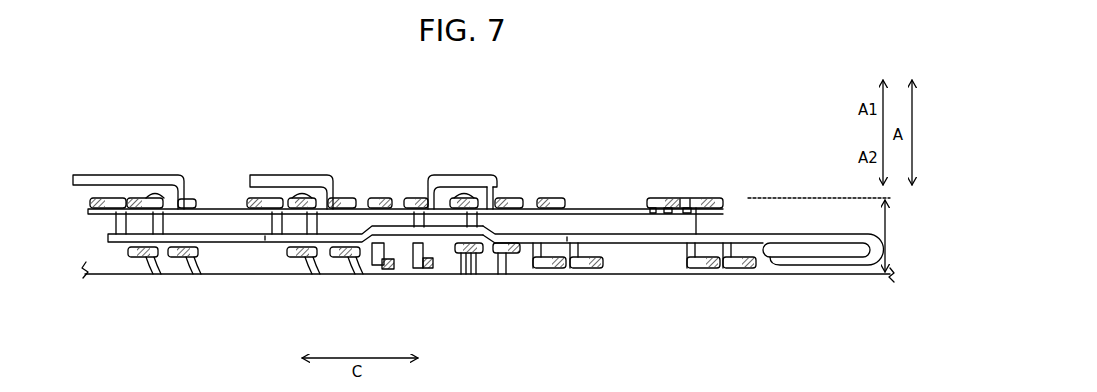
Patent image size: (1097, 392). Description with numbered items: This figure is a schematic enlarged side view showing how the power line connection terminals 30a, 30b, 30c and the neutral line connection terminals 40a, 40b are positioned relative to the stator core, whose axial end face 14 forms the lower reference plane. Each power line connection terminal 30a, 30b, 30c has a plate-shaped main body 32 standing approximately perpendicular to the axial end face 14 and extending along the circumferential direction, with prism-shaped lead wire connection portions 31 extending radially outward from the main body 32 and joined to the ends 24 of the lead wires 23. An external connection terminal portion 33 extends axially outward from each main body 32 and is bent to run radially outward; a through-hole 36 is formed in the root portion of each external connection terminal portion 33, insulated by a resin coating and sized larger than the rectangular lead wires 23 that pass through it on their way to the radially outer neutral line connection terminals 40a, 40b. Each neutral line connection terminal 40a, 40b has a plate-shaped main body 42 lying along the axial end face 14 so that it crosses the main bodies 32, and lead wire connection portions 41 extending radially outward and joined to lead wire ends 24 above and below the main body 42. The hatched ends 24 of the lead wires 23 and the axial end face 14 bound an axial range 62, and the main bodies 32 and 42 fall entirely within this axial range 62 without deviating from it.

The axial end face 14 is at (644, 266).
The lead wire 23 is at (186, 199).
The end of lead wire 24 is at (672, 198).
The power line connection terminal 30a is at (145, 172).
The power line connection terminal 30b is at (303, 172).
The power line connection terminal 30c is at (463, 172).
The lead wire connection portion 31 is at (680, 198).
The main body 32 is at (220, 208).
The external connection terminal portion 33 is at (478, 172).
The through-hole 36 is at (150, 196).
The neutral line connection terminal 40a is at (243, 252).
The neutral line connection terminal 40b is at (664, 253).
The lead wire connection portion 41 is at (264, 200).
The main body 42 is at (267, 240).
The axial range 62 is at (828, 235).